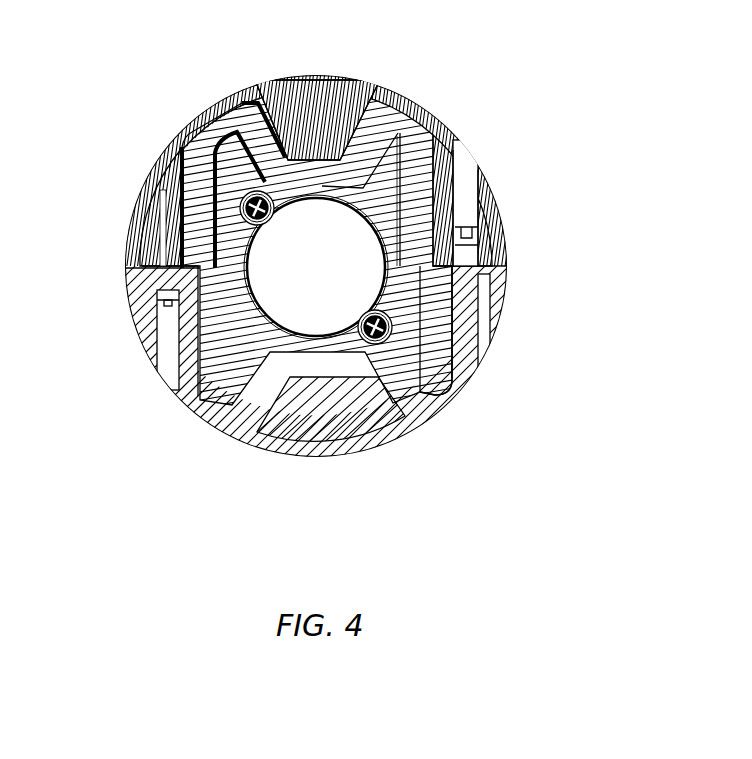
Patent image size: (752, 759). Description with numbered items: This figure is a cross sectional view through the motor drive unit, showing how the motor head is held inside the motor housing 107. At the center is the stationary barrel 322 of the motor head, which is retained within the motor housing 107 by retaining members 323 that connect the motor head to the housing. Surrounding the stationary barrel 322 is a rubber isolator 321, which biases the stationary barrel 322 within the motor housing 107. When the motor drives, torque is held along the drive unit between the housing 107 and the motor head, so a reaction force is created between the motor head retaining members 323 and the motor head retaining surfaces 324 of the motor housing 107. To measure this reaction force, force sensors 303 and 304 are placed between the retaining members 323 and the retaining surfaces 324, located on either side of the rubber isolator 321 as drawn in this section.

The motor housing 107 is at (352, 437).
The force sensor 303 is at (232, 128).
The force sensor 304 is at (198, 233).
The rubber isolator 321 is at (243, 107).
The stationary barrel 322 is at (298, 199).
The motor head retaining member 323 is at (378, 178).
The motor head retaining surface 324 is at (286, 113).